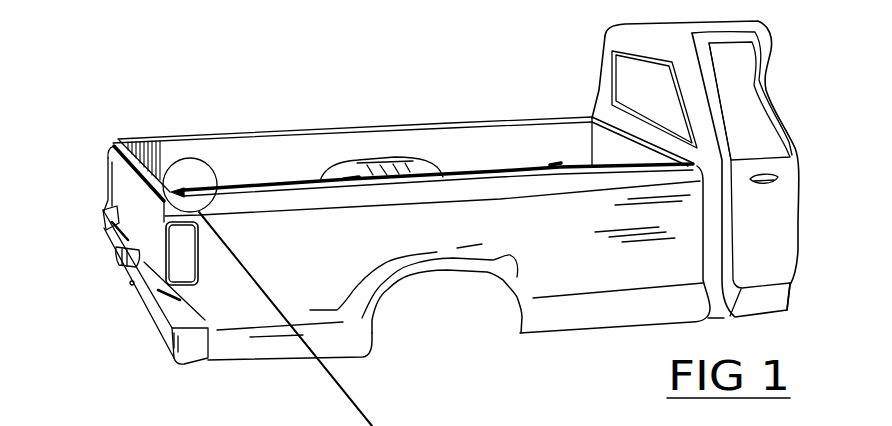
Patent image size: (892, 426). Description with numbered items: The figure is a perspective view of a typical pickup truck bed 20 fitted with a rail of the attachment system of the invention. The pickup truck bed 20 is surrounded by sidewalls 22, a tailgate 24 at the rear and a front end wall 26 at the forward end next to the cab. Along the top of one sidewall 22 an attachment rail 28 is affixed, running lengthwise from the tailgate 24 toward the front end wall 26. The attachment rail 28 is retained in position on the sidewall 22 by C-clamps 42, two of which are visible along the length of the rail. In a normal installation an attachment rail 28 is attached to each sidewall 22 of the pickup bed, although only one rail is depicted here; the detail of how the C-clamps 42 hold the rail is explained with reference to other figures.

The pickup truck bed 20 is at (543, 348).
The sidewall 22 is at (268, 152).
The tailgate 24 is at (123, 189).
The front end wall 26 is at (600, 140).
The attachment rail 28 is at (278, 189).
The C-clamp 42 is at (356, 181).